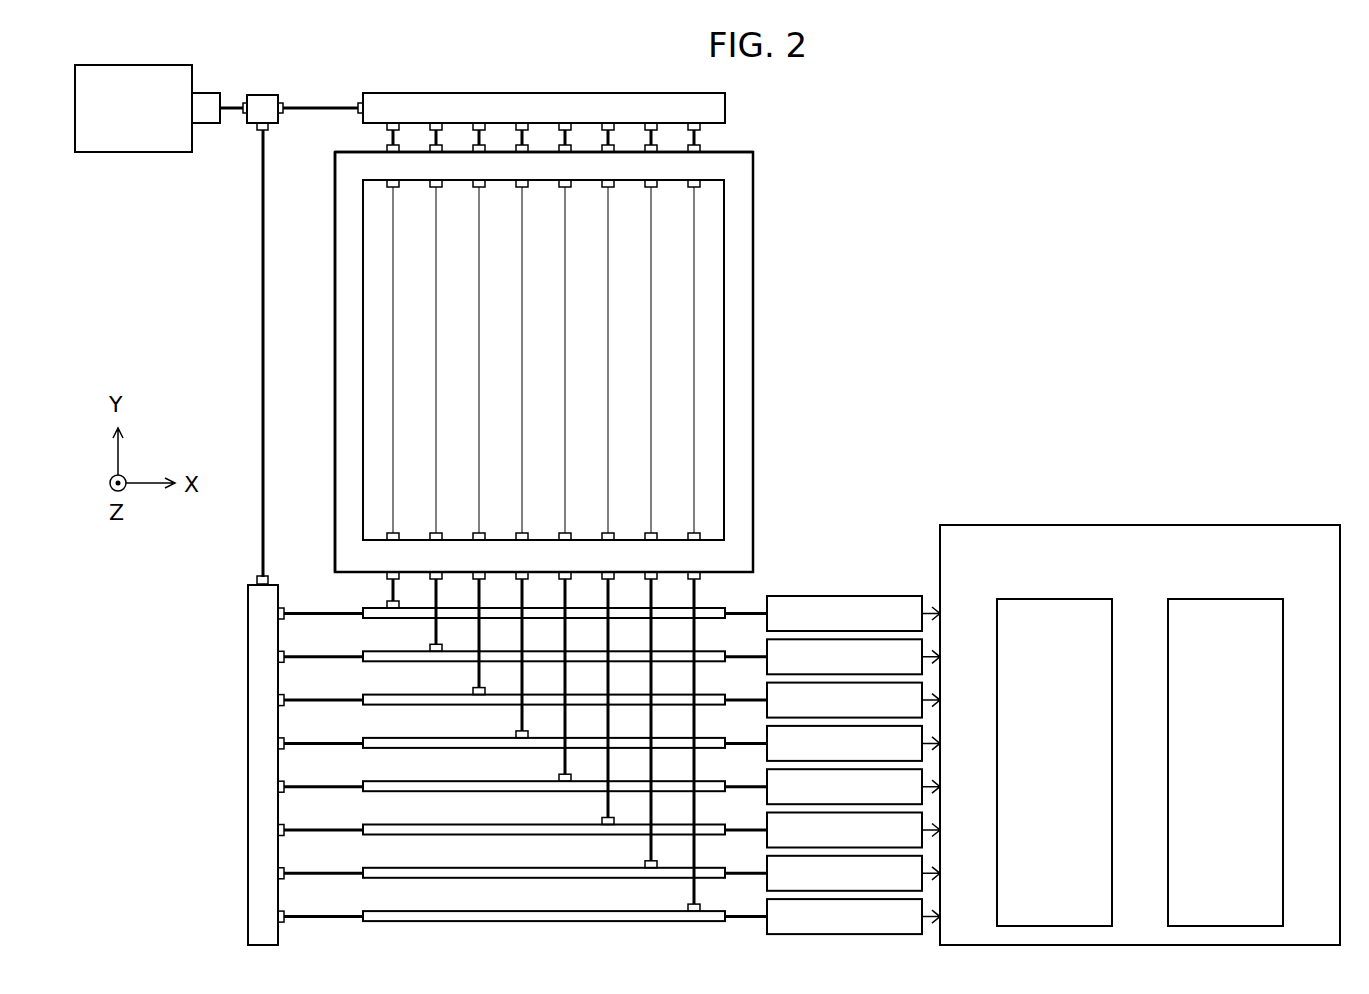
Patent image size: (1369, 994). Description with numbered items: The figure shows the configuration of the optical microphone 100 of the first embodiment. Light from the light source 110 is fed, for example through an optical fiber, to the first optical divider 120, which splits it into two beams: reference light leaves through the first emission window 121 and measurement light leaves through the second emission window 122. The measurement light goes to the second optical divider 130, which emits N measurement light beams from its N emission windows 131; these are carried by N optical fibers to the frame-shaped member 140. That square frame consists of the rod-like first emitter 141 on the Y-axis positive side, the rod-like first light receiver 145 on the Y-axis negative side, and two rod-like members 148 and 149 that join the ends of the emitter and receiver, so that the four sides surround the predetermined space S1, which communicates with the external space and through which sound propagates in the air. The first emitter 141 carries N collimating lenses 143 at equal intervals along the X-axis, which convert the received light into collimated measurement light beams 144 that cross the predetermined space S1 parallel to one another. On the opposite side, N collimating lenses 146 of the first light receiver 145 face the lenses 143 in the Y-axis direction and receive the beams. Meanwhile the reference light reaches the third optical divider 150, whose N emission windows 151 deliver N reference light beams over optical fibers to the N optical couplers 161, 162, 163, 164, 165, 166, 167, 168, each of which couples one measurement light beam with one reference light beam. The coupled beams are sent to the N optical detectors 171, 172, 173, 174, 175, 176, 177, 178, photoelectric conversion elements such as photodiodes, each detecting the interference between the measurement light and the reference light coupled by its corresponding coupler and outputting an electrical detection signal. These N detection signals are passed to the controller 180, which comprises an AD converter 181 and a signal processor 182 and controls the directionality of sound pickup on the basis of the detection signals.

The optical microphone 100 is at (915, 152).
The light source 110 is at (134, 153).
The first optical divider 120 is at (254, 126).
The first emission window 121 is at (268, 130).
The second emission window 122 is at (285, 103).
The second optical divider 130 is at (727, 108).
The emission windows 131 is at (388, 128).
The frame-shaped member 140 is at (755, 180).
The first emitter 141 is at (740, 153).
The collimating lenses 143 is at (393, 188).
The measurement light beams 144 is at (436, 263).
The first light receiver 145 is at (718, 540).
The collimating lenses 146 is at (390, 535).
The rod-like member 148 is at (340, 440).
The rod-like member 149 is at (740, 340).
The third optical divider 150 is at (247, 600).
The emission windows 151 is at (280, 615).
The optical coupler 161 is at (372, 620).
The optical coupler 162 is at (372, 663).
The optical coupler 163 is at (372, 707).
The optical coupler 164 is at (372, 750).
The optical coupler 165 is at (372, 793).
The optical coupler 166 is at (372, 836).
The optical coupler 167 is at (372, 880).
The optical coupler 168 is at (372, 923).
The optical detector 171 is at (767, 631).
The optical detector 172 is at (767, 674).
The optical detector 173 is at (767, 718).
The optical detector 174 is at (767, 761).
The optical detector 175 is at (767, 804).
The optical detector 176 is at (767, 848).
The optical detector 177 is at (767, 891).
The optical detector 178 is at (767, 934).
The controller 180 is at (1254, 525).
The AD converter 181 is at (1070, 599).
The signal processor 182 is at (1242, 599).
The predetermined space S1 is at (688, 523).